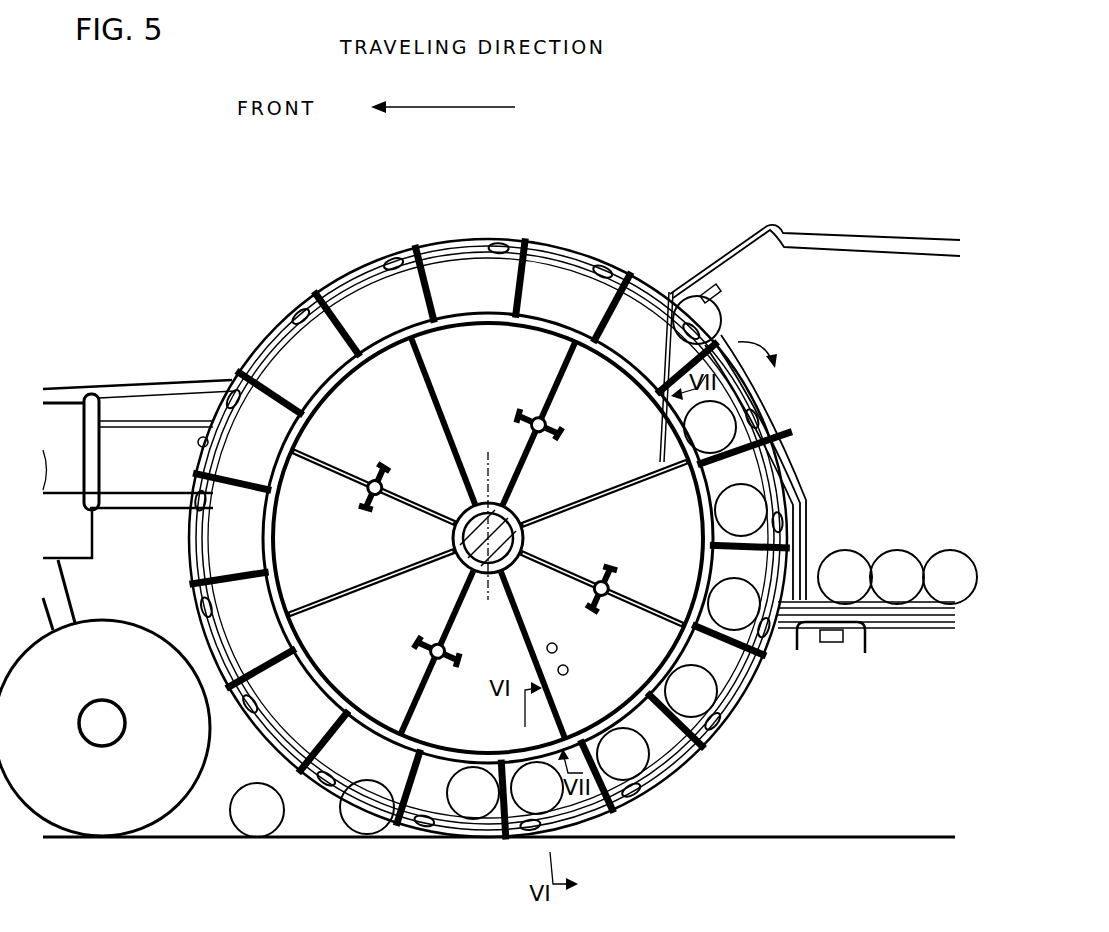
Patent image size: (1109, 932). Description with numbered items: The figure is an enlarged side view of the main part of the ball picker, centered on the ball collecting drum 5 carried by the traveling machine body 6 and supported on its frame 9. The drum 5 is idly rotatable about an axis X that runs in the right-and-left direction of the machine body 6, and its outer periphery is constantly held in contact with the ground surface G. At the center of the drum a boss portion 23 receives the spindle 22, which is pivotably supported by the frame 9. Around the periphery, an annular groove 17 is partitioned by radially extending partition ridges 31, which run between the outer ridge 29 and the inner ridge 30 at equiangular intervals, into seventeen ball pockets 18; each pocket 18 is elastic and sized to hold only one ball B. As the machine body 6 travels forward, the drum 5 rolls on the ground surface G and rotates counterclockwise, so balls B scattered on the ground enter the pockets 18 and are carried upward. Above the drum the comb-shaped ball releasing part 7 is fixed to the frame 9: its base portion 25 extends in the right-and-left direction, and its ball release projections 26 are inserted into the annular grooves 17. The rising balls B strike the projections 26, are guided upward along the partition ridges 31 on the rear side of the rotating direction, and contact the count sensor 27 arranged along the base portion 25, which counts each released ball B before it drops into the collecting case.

The ball collecting drum 5 is at (441, 232).
The traveling machine body 6 is at (159, 376).
The ball releasing part 7 is at (795, 395).
The frame 9 is at (206, 382).
The annular groove 17 is at (394, 282).
The ball pocket 18 is at (487, 278).
The spindle 22 is at (470, 550).
The boss portion 23 is at (490, 505).
The base portion 25 is at (693, 283).
The ball release projection 26 is at (658, 365).
The count sensor 27 is at (720, 290).
The outer ridge 29 is at (551, 250).
The inner ridge 30 is at (545, 332).
The partition ridge 31 is at (343, 320).
The ball B is at (722, 325).
The ground surface G is at (188, 828).
The axis X is at (486, 537).